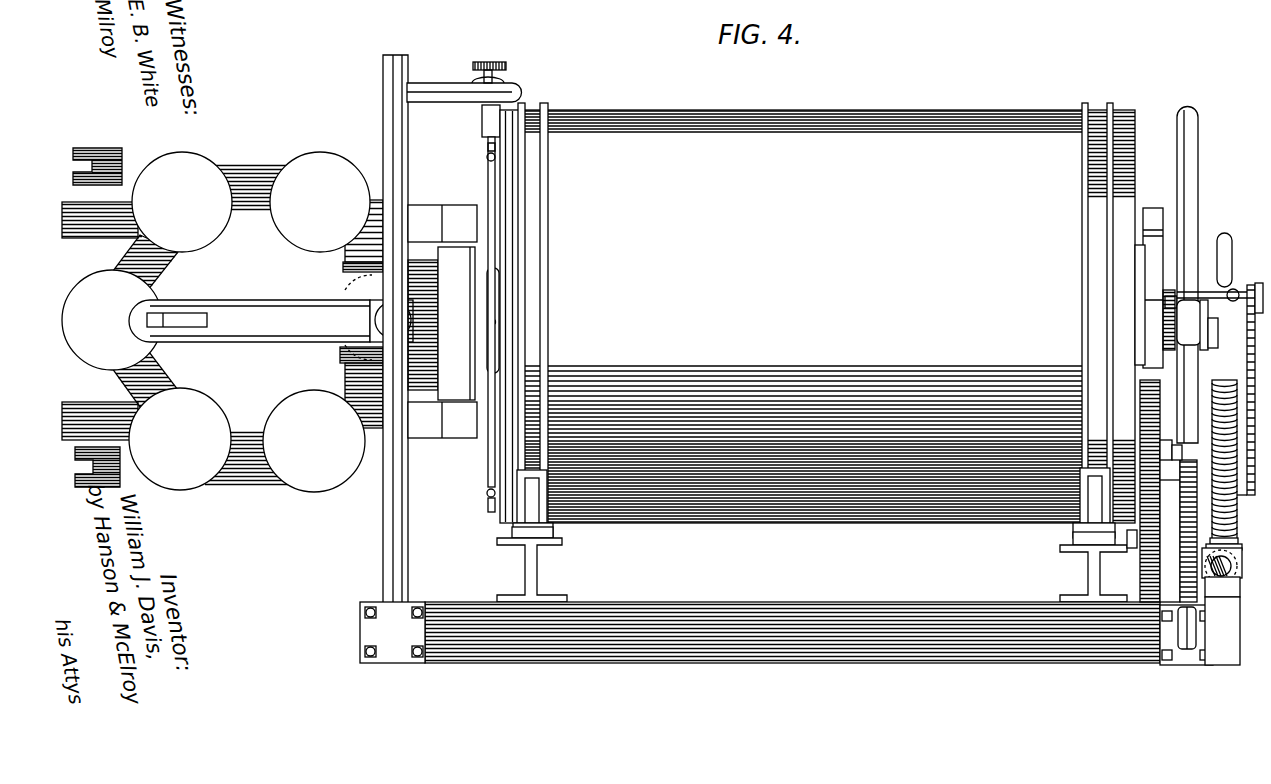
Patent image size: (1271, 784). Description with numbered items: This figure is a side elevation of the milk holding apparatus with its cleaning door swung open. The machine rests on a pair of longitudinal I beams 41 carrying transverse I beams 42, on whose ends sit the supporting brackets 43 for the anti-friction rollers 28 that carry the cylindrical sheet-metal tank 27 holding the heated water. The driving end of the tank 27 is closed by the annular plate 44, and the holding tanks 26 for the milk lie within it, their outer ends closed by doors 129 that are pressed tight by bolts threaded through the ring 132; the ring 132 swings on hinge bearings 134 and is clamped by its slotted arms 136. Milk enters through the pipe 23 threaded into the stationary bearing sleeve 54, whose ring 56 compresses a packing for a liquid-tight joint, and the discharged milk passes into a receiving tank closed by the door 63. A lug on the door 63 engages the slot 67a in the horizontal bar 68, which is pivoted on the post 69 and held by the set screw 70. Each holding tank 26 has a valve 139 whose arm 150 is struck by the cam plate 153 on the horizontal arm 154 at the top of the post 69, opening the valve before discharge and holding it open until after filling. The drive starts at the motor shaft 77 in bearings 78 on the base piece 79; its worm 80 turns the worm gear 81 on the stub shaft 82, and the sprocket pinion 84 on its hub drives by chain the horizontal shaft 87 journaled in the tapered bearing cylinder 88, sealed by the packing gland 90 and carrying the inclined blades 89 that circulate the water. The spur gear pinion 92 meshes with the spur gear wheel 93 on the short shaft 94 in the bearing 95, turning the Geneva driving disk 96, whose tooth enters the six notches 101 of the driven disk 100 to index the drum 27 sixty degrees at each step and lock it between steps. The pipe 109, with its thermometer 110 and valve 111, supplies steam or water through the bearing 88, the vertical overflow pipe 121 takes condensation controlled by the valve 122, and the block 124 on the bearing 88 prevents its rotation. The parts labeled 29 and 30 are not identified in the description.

The pipe 23 is at (343, 268).
The holding tanks 26 is at (500, 186).
The tank 27 is at (900, 110).
The anti-friction rollers 28 is at (490, 522).
The drum end plate 29 is at (548, 210).
The lower bearing bracket 30 is at (343, 355).
The longitudinal I beams 41 is at (812, 662).
The transverse I beams 42 is at (540, 572).
The supporting brackets 43 is at (556, 533).
The annular plate 44 is at (1128, 548).
The stationary bearing sleeve 54 is at (428, 352).
The ring 56 is at (470, 318).
The door 63 is at (418, 300).
The slot 67a is at (193, 314).
The horizontal bar 68 is at (265, 330).
The post 69 is at (404, 158).
The set screw 70 is at (376, 319).
The shaft 77 is at (1231, 566).
The bearings 78 is at (1240, 596).
The base piece 79 is at (1230, 634).
The worm 80 is at (1240, 578).
The worm gear 81 is at (1228, 547).
The stub shaft 82 is at (1233, 540).
The sprocket pinion 84 is at (1240, 497).
The horizontal shaft 87 is at (1235, 290).
The bearing cylinder 88 is at (1178, 340).
The inclined blades 89 is at (1240, 395).
The packing gland 90 is at (1200, 366).
The spur gear pinion 92 is at (1085, 456).
The spur gear wheel 93 is at (1182, 562).
The short shaft 94 is at (1178, 480).
The bearing 95 is at (1183, 540).
The driving disk 96 is at (1182, 453).
The driven disk 100 is at (1152, 253).
The notches 101 is at (1153, 207).
The pipe 109 is at (1200, 290).
The thermometer 110 is at (1233, 249).
The valve 111 is at (1220, 450).
The vertical overflow pipe 121 is at (1197, 151).
The valve 122 is at (1205, 342).
The block 124 is at (1165, 302).
The doors 129 is at (216, 322).
The ring 132 is at (252, 168).
The hinge bearings 134 is at (428, 205).
The arms 136 is at (82, 148).
The valve 139 is at (489, 162).
The arm 150 is at (487, 156).
The cam plate 153 is at (507, 96).
The horizontal arm 154 is at (430, 88).